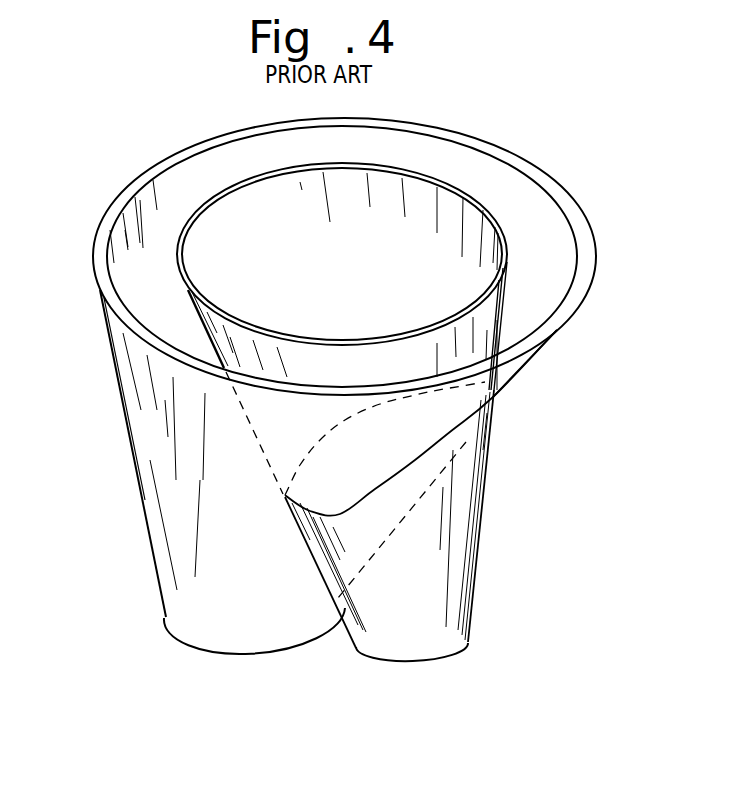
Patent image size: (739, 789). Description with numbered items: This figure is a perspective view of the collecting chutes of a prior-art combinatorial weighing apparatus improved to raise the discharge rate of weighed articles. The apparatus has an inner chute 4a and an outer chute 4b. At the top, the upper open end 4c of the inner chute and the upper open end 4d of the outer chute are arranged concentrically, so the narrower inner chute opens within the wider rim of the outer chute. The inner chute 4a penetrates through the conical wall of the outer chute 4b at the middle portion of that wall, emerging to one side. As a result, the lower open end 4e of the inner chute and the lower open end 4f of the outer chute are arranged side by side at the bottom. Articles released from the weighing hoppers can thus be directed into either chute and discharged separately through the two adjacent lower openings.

The inner chute 4a is at (485, 489).
The outer chute 4b is at (135, 492).
The upper open end of inner chute 4c is at (440, 178).
The upper open end of outer chute 4d is at (558, 180).
The lower open end of inner chute 4e is at (229, 655).
The lower open end of outer chute 4f is at (430, 660).